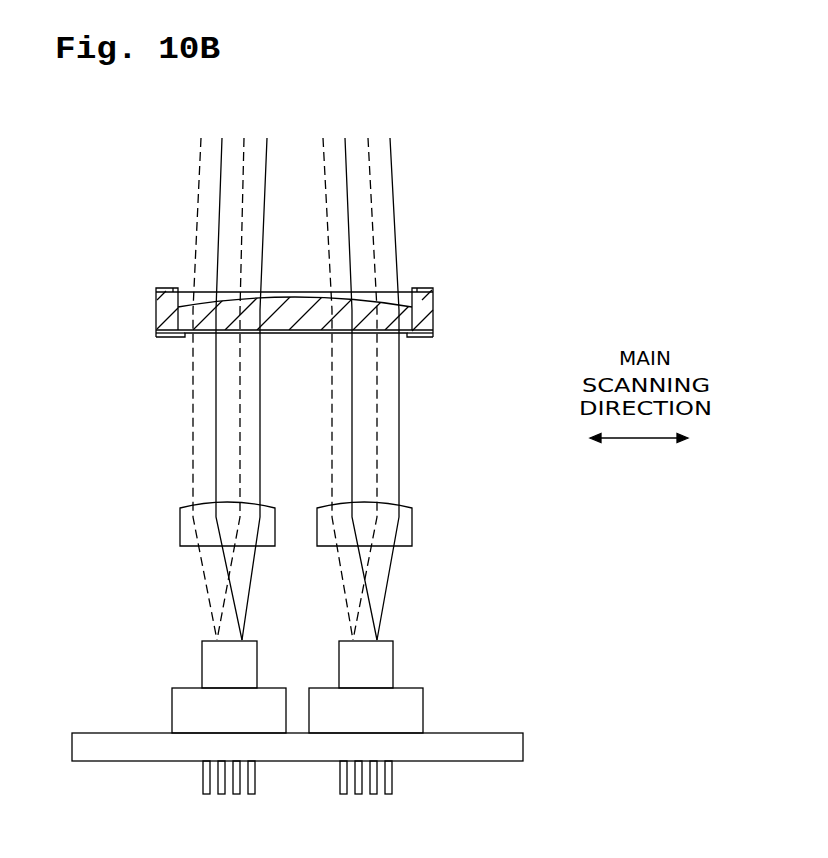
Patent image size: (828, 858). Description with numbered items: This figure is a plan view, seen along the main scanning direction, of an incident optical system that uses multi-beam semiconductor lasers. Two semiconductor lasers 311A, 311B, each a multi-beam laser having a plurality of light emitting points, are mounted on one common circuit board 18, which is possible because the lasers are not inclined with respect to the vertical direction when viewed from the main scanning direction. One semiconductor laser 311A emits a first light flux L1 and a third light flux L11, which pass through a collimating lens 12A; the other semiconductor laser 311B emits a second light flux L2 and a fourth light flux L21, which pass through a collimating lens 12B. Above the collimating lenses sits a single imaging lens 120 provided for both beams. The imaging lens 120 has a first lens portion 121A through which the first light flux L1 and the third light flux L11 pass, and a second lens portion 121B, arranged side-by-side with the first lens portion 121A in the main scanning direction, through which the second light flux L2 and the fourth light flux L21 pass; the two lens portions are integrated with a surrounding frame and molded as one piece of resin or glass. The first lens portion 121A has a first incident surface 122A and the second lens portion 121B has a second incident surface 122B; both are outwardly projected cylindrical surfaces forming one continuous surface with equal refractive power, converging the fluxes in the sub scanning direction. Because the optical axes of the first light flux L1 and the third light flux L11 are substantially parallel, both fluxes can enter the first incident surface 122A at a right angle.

The imaging lens 120 is at (326, 293).
The first lens portion 121A is at (387, 303).
The second lens portion 121B is at (203, 310).
The first incident surface 122A is at (405, 337).
The second incident surface 122B is at (186, 337).
The first light flux L1 is at (399, 412).
The third light flux L11 is at (377, 443).
The second light flux L2 is at (215, 453).
The fourth light flux L21 is at (193, 422).
The collimating lens 12A is at (412, 532).
The collimating lens 12B is at (180, 527).
The semiconductor laser 311A is at (413, 708).
The semiconductor laser 311B is at (187, 708).
The circuit board 18 is at (503, 750).